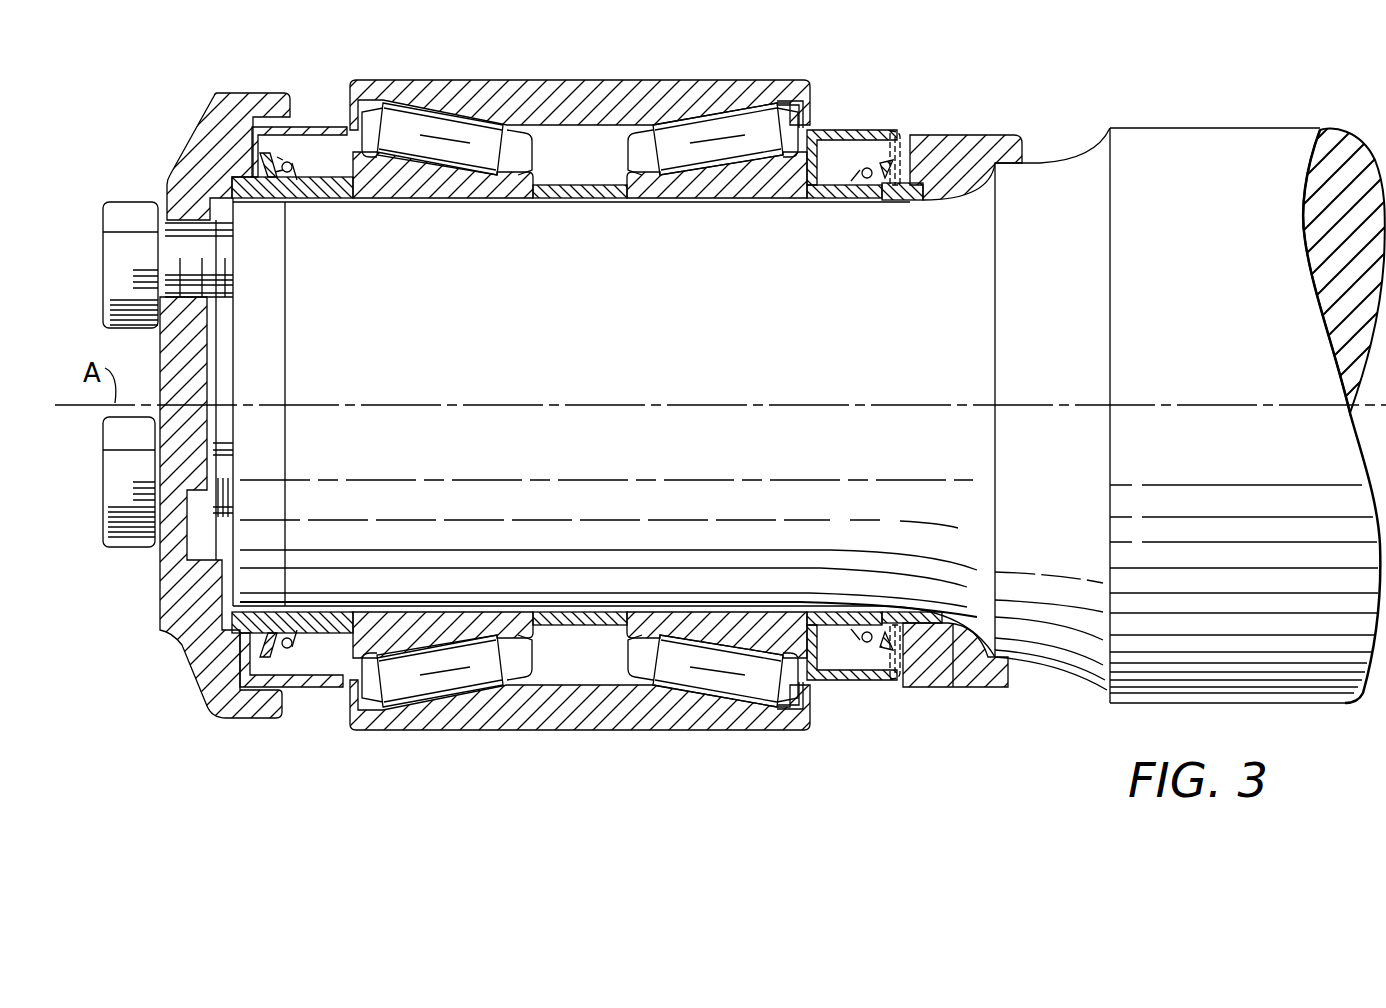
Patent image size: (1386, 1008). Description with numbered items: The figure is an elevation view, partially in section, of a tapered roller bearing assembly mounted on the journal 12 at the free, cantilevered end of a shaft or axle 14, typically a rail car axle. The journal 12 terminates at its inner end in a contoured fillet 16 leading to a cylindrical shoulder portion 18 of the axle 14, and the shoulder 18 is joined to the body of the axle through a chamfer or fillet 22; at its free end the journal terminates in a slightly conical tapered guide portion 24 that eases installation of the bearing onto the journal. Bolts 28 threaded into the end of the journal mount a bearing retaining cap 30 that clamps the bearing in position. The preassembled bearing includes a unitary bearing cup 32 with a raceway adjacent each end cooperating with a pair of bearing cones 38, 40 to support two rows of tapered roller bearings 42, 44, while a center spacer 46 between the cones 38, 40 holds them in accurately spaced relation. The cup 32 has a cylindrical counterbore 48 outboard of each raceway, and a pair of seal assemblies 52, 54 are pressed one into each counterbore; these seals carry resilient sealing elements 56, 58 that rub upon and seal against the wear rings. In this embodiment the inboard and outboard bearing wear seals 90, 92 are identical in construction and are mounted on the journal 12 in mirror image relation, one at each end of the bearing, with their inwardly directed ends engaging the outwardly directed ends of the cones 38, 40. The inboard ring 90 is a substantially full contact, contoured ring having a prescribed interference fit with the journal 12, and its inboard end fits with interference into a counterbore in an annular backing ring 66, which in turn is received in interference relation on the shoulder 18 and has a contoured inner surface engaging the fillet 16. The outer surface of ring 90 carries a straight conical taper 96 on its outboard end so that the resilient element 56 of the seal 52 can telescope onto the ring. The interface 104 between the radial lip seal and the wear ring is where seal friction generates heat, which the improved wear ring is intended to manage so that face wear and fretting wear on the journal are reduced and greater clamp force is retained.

The journal 12 is at (652, 374).
The shaft or axle 14 is at (1263, 131).
The contoured fillet 16 is at (955, 657).
The cylindrical shoulder portion 18 is at (1044, 163).
The fillet 22 is at (1104, 138).
The tapered guide portion 24 is at (278, 433).
The cap screws or bolts 28 is at (128, 212).
The bearing retaining cap 30 is at (208, 677).
The bearing cup 32 is at (608, 93).
The bearing cone 38 is at (710, 193).
The bearing cone 40 is at (452, 193).
The tapered roller bearings 42 is at (720, 128).
The tapered roller bearings 44 is at (462, 133).
The center spacer 46 is at (583, 193).
The cylindrical counterbore 48 is at (793, 100).
The seal assembly 52 is at (897, 137).
The seal assembly 54 is at (317, 127).
The resilient sealing element 56 is at (884, 185).
The resilient sealing element 58 is at (278, 157).
The annular backing ring 66 is at (977, 147).
The inboard bearing wear seal 90 is at (878, 197).
The outboard bearing wear seal 92 is at (350, 190).
The straight conical taper 96 is at (840, 173).
The interface 104 is at (291, 180).